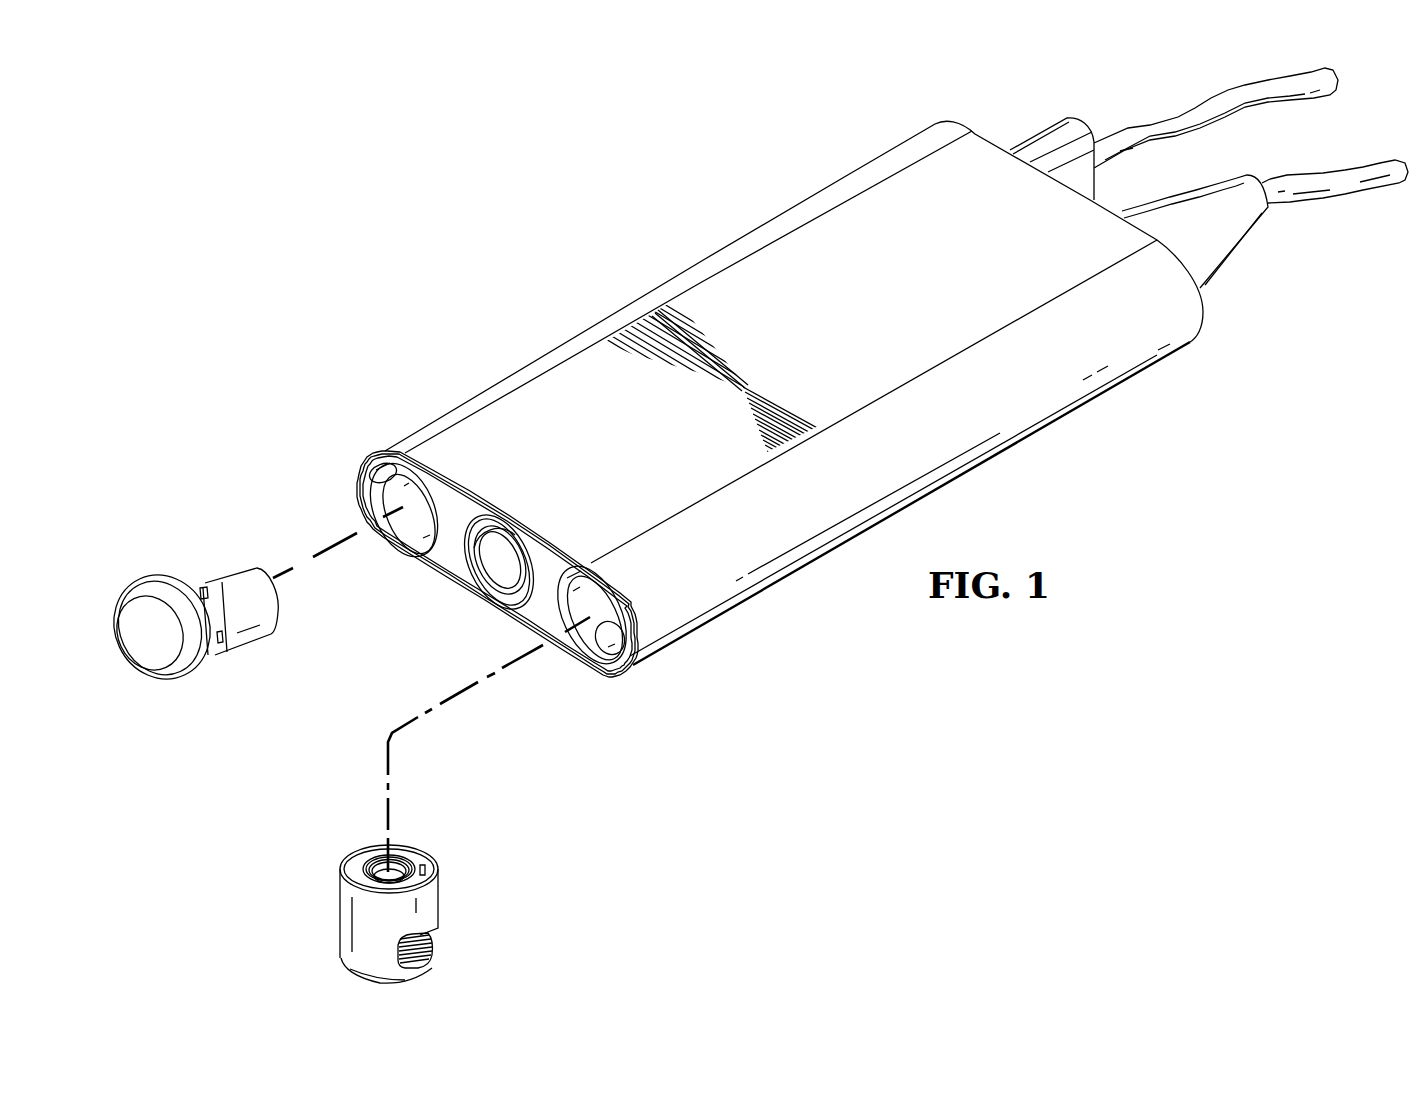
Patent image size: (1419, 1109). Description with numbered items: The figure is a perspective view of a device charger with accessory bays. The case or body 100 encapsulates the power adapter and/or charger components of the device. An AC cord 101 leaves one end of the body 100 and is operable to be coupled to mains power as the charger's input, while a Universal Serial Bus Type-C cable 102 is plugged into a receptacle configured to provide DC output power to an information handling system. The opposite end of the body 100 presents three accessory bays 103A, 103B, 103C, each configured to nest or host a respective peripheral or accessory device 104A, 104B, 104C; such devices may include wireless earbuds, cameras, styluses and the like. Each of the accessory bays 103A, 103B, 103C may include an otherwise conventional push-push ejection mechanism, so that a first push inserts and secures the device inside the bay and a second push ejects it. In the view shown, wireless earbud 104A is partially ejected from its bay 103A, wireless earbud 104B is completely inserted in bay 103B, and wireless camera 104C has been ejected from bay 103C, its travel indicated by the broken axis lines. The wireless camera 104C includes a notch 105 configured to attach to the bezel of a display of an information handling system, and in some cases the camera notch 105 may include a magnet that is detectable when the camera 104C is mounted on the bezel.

The case or body 100 is at (706, 262).
The AC cord 101 is at (1222, 263).
The USB Type-C cable 102 is at (1040, 128).
The accessory bay 103A is at (375, 487).
The accessory bay 103B is at (502, 537).
The accessory bay 103C is at (597, 673).
The wireless earbud 104A is at (143, 583).
The wireless earbud 104B is at (490, 563).
The wireless camera 104C is at (340, 910).
The notch 105 is at (432, 940).